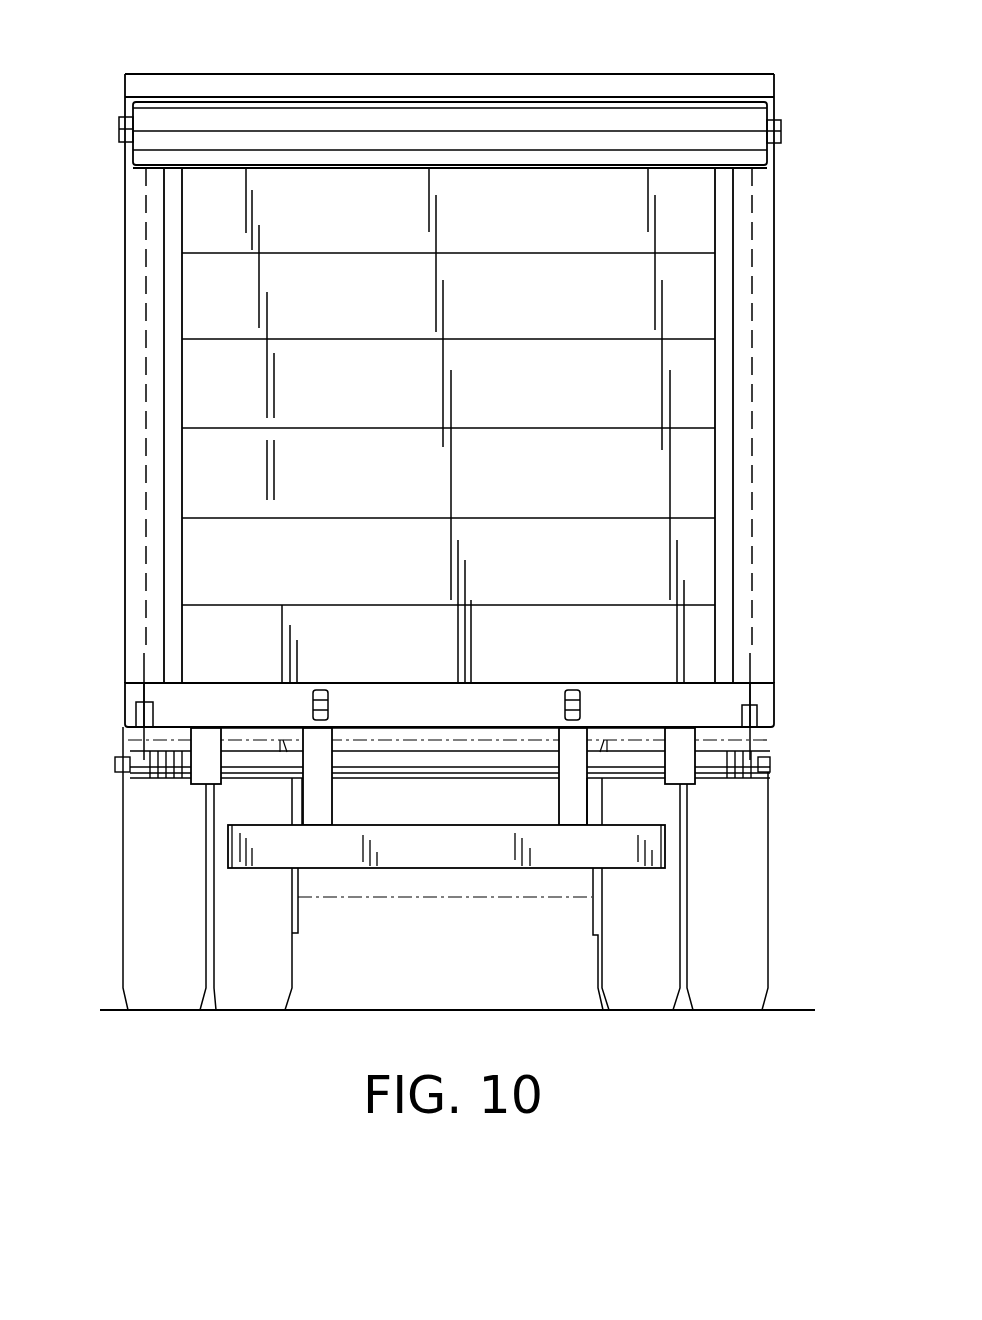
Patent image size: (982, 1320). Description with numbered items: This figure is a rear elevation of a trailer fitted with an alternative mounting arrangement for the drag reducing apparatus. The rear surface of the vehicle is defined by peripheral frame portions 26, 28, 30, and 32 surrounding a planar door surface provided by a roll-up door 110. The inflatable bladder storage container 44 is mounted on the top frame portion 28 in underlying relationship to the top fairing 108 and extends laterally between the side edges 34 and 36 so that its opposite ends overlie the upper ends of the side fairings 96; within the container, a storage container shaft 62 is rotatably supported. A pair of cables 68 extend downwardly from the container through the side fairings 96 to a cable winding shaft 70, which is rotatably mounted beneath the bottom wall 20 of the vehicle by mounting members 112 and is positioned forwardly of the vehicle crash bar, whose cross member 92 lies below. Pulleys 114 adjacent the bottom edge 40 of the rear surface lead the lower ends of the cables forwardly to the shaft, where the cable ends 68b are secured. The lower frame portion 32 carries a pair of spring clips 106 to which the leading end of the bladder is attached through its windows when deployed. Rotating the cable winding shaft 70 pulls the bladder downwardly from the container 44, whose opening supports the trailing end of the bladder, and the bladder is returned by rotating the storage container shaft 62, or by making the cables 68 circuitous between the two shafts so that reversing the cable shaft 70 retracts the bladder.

The bottom wall 20 is at (170, 733).
The peripheral trailer frame portion 26 is at (170, 367).
The top frame portion 28 is at (282, 105).
The peripheral trailer frame portion 30 is at (722, 387).
The lower frame portion 32 is at (673, 713).
The vertical side edge 34 is at (123, 295).
The vertical side edge 36 is at (775, 308).
The bottom edge 40 is at (722, 727).
The inflatable bladder storage container 44 is at (613, 123).
The storage container shaft 62 is at (790, 138).
The cables 68 is at (143, 237).
The cable ends 68b is at (152, 780).
The cable winding shaft 70 is at (352, 783).
The cross member 92 is at (440, 855).
The side fairings 96 is at (133, 440).
The spring clips 106 is at (328, 695).
The top fairing 108 is at (455, 80).
The roll-up door 110 is at (533, 308).
The mounting members 112 is at (205, 782).
The pulleys 114 is at (124, 718).